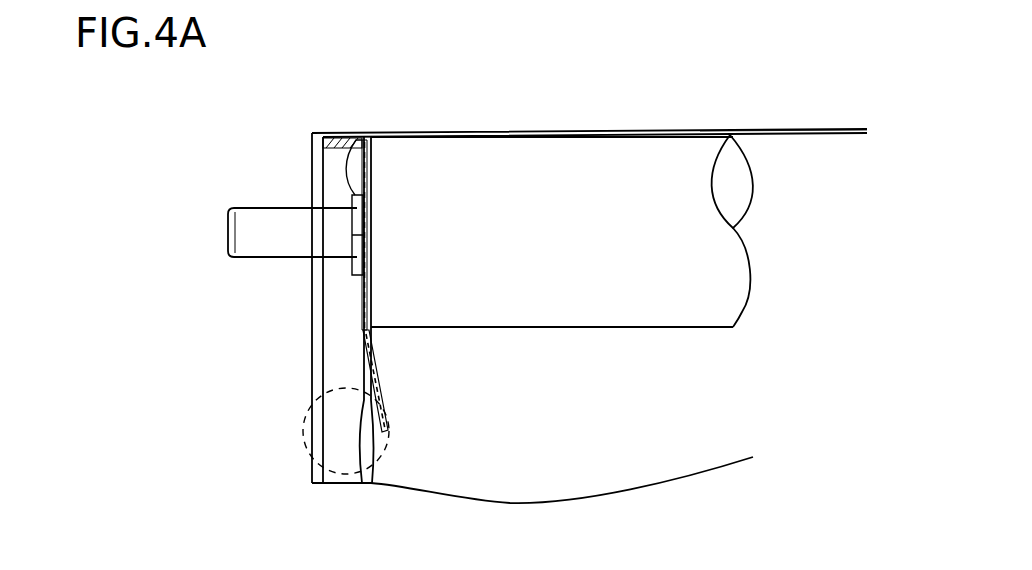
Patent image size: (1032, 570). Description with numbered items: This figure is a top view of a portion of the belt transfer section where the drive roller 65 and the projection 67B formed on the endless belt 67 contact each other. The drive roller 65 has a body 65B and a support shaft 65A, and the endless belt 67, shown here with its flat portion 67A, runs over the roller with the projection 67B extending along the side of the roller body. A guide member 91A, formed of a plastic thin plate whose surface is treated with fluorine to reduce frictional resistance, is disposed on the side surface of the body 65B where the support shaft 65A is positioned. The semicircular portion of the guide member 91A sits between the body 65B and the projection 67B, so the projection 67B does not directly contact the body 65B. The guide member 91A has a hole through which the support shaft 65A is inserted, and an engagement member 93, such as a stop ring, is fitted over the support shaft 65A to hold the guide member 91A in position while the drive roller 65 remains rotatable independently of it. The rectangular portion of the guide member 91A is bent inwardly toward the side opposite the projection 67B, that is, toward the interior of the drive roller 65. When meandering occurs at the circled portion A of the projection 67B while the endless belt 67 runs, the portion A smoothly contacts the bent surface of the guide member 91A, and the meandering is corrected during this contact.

The drive roller 65 is at (703, 348).
The support shaft 65A is at (253, 225).
The body 65B is at (627, 330).
The endless belt 67 is at (767, 111).
The frame top plate 67A is at (795, 134).
The projection 67B is at (331, 140).
The guide member 91A is at (381, 378).
The engagement member 93 is at (363, 140).
The circled portion A is at (303, 418).